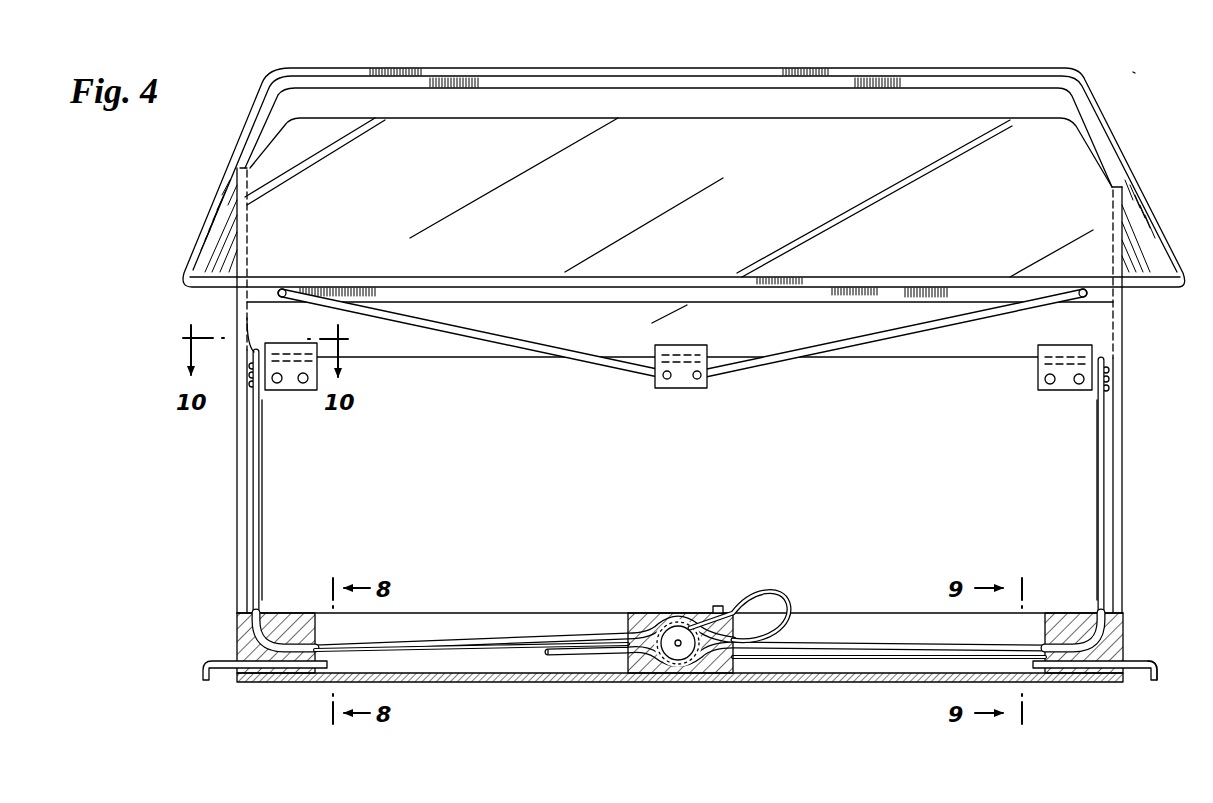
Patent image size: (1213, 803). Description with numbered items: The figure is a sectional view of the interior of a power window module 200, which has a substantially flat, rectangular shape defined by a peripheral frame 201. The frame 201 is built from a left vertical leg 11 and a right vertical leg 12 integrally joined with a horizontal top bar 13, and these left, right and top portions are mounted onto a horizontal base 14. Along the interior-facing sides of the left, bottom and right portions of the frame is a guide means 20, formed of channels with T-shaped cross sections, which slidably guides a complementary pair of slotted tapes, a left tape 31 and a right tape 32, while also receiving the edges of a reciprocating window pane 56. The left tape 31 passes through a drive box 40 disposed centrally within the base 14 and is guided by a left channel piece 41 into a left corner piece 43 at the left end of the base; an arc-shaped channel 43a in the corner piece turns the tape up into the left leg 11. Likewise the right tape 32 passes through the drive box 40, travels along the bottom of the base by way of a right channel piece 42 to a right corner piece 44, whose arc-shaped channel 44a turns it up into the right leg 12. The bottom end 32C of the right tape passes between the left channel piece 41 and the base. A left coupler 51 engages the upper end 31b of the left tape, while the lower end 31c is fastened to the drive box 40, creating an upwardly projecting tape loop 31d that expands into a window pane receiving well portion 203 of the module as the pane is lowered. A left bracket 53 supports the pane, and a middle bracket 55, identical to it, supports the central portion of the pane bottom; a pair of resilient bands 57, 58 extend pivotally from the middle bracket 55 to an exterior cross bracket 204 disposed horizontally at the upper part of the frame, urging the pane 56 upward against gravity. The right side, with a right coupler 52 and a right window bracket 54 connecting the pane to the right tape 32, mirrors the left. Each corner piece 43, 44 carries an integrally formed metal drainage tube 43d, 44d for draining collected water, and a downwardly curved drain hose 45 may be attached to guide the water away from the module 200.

The power window module 200 is at (1137, 72).
The peripheral frame 201 is at (1122, 190).
The horizontal top bar 13 is at (710, 78).
The window pane 56 is at (678, 197).
The exterior cross bracket 204 is at (729, 297).
The window pane receiving well portion 203 is at (680, 485).
The left vertical leg 11 is at (240, 505).
The right vertical leg 12 is at (1118, 464).
The guide means 20 is at (270, 486).
The left tape 31 is at (264, 443).
The upper end of the left tape 31b is at (247, 320).
The lower end of the left tape 31c is at (713, 606).
The tape loop 31d is at (786, 595).
The right tape 32 is at (1098, 436).
The bottom end of the right tape 32C is at (567, 658).
The drive box 40 is at (695, 675).
The left channel piece 41 is at (475, 655).
The right channel piece 42 is at (806, 660).
The left corner piece 43 is at (237, 636).
The arc-shaped channel 43a is at (288, 640).
The metal drainage tube 43d is at (258, 668).
The right corner piece 44 is at (1110, 640).
The arc-shaped channel 44a is at (1072, 625).
The metal drainage tube 44d is at (1072, 668).
The drain hose 45 is at (1160, 666).
The horizontal base 14 is at (880, 682).
The left coupler 51 is at (262, 385).
The right coupler 52 is at (1092, 392).
The left bracket 53 is at (288, 350).
The right window bracket 54 is at (1068, 350).
The middle bracket 55 is at (680, 388).
The resilient band 57 is at (590, 365).
The resilient band 58 is at (796, 366).